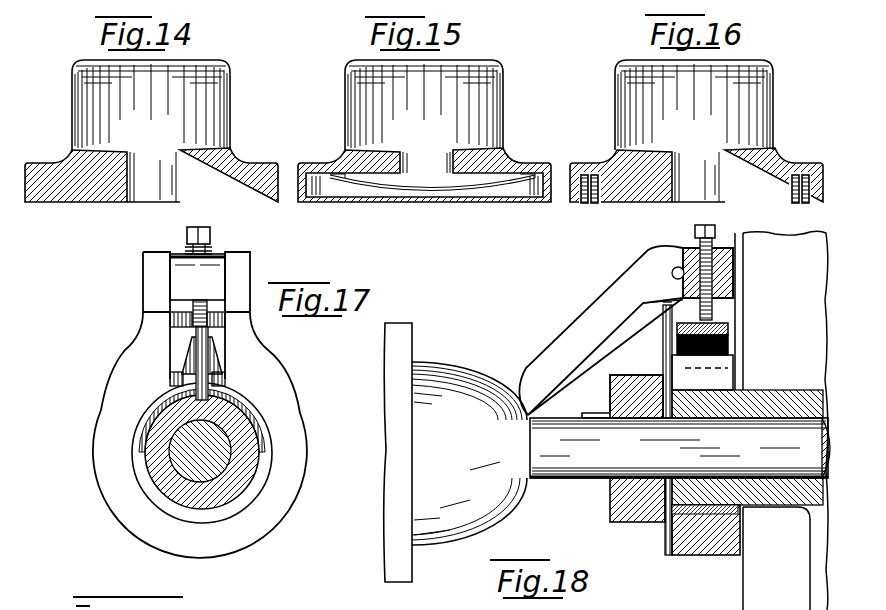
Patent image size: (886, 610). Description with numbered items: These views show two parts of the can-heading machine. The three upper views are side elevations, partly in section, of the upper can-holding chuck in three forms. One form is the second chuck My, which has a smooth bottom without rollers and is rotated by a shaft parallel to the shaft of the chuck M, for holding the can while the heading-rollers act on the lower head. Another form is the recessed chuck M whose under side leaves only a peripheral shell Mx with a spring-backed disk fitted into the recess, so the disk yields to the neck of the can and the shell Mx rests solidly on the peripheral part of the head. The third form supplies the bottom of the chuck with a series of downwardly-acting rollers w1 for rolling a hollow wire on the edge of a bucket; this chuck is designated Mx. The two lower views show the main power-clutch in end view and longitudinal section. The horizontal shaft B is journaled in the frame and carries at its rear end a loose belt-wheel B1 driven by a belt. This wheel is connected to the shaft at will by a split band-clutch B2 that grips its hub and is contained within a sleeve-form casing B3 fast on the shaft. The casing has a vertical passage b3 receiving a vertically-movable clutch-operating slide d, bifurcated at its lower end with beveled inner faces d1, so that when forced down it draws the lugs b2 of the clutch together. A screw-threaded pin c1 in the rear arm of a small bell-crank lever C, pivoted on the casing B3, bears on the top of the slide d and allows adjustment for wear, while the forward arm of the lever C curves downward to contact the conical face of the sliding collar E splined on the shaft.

In FIG. 14, the second chuck My is at (232, 76).
In FIG. 15, the upper chuck M is at (502, 87).
In FIG. 15, the peripheral shell of chuck / hollow-wiring chuck Mx is at (541, 197).
In FIG. 16, the peripheral shell of chuck / hollow-wiring chuck Mx is at (613, 73).
In FIG. 15, the downwardly-acting rollers w1 is at (357, 176).
In FIG. 16, the downwardly-acting rollers w1 is at (790, 204).
In FIG. 17, the screw-threaded pin c1 is at (210, 234).
In FIG. 18, the screw-threaded pin c1 is at (695, 228).
In FIG. 17, the bell-crank lever C is at (200, 280).
In FIG. 18, the bell-crank lever C is at (628, 272).
In FIG. 17, the vertical passage b3 is at (226, 320).
In FIG. 18, the vertical passage b3 is at (683, 304).
In FIG. 17, the clutch-operating slide d is at (218, 345).
In FIG. 18, the clutch-operating slide d is at (728, 327).
In FIG. 17, the beveled inner faces d1 is at (212, 343).
In FIG. 18, the beveled inner faces d1 is at (728, 347).
In FIG. 17, the lugs b2 is at (234, 374).
In FIG. 18, the lugs b2 is at (692, 372).
In FIG. 17, the horizontal shaft B is at (213, 438).
In FIG. 18, the horizontal shaft B is at (565, 466).
In FIG. 17, the split band-clutch B2 is at (262, 472).
In FIG. 18, the split band-clutch B2 is at (667, 532).
In FIG. 17, the sleeve-form casing B3 is at (272, 515).
In FIG. 18, the sleeve-form casing B3 is at (613, 500).
In FIG. 18, the loose belt-wheel B1 is at (750, 420).
In FIG. 18, the sliding collar E is at (460, 515).